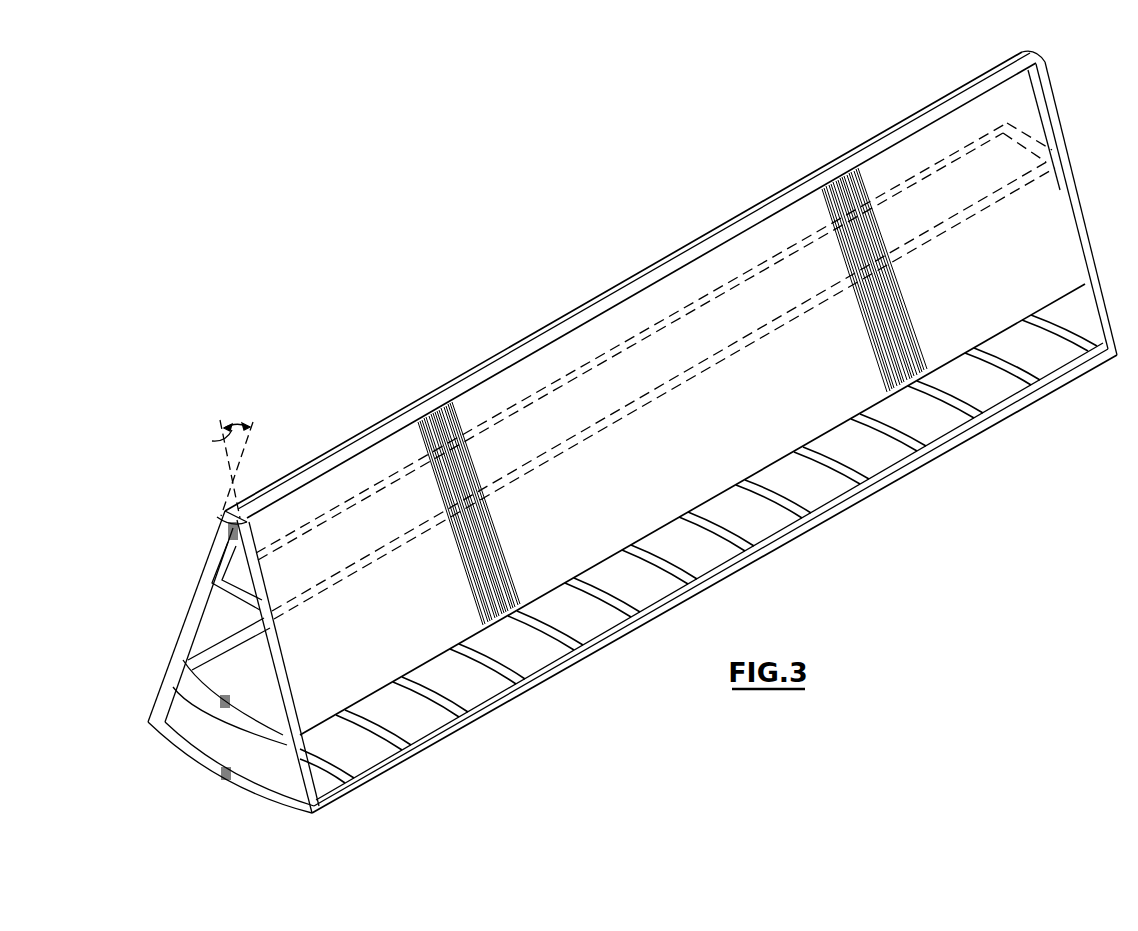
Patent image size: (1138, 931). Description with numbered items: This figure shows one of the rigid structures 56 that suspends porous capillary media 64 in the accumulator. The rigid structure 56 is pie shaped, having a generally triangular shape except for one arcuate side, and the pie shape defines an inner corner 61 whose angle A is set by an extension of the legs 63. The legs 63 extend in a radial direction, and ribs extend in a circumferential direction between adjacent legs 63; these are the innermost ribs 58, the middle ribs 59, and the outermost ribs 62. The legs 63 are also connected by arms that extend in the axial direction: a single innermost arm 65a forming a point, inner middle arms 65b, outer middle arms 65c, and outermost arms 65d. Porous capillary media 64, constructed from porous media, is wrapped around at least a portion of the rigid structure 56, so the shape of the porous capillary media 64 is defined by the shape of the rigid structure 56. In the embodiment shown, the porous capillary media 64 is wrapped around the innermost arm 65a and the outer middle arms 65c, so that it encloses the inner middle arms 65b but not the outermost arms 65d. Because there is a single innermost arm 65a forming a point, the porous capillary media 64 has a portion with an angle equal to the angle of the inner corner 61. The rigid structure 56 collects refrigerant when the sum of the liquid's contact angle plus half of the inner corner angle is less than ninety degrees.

The rigid structure 56 is at (203, 412).
The innermost rib 58 is at (238, 604).
The middle rib 59 is at (217, 703).
The inner corner 61 is at (228, 534).
The outermost rib 62 is at (272, 797).
The leg 63 is at (222, 553).
The porous capillary media 64 is at (632, 462).
The innermost arm 65a is at (323, 467).
The inner middle arm 65b is at (210, 590).
The outer middle arm 65c is at (200, 652).
The outermost arm 65d is at (183, 740).